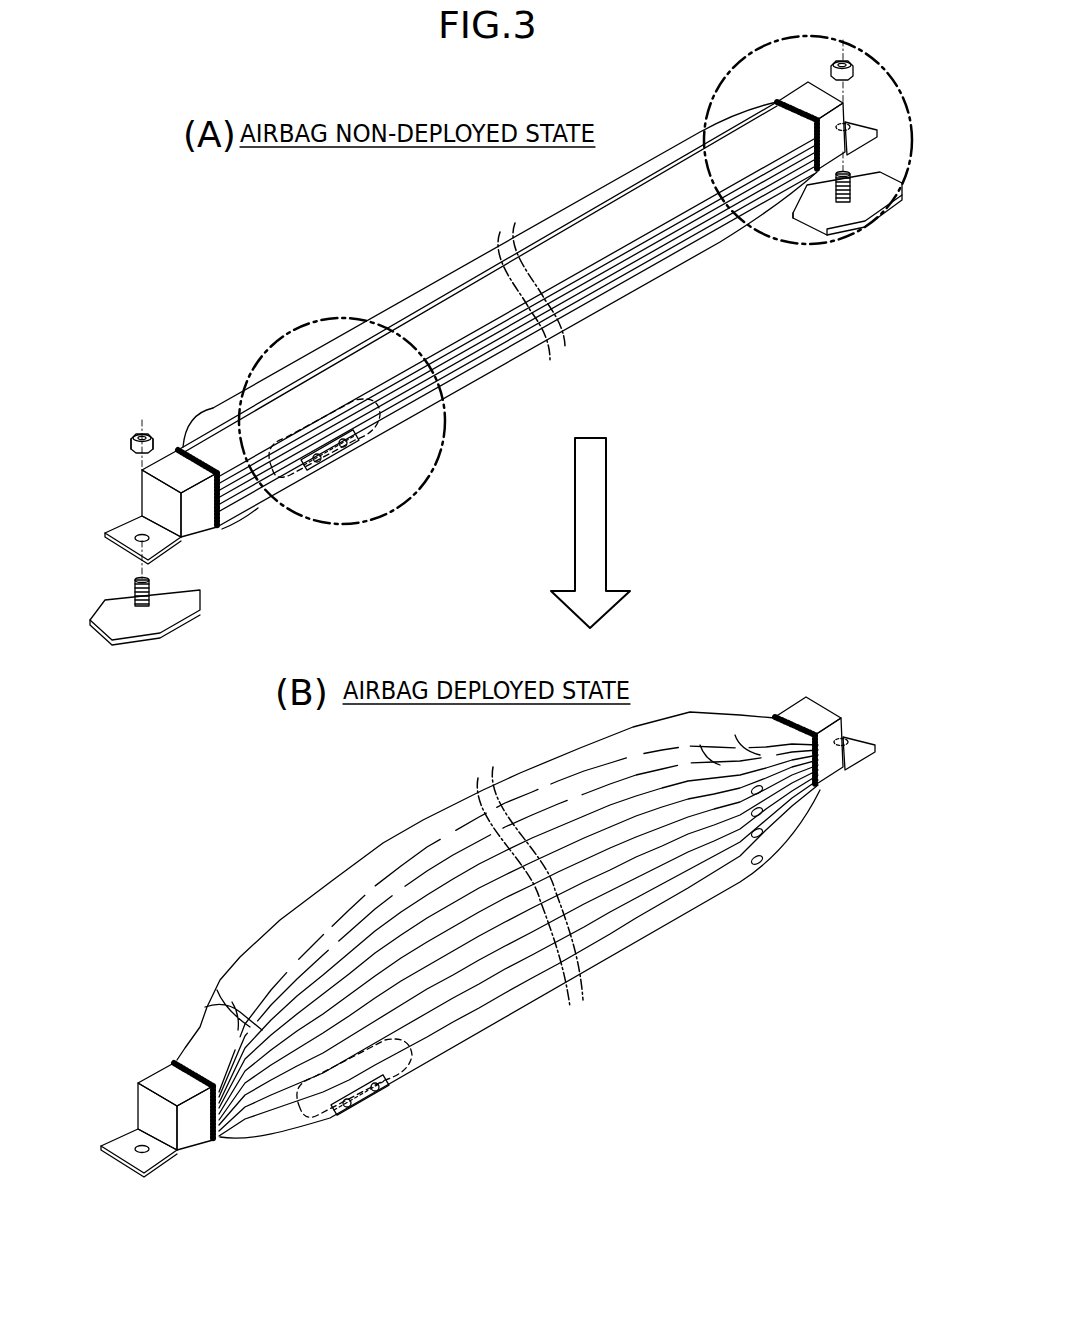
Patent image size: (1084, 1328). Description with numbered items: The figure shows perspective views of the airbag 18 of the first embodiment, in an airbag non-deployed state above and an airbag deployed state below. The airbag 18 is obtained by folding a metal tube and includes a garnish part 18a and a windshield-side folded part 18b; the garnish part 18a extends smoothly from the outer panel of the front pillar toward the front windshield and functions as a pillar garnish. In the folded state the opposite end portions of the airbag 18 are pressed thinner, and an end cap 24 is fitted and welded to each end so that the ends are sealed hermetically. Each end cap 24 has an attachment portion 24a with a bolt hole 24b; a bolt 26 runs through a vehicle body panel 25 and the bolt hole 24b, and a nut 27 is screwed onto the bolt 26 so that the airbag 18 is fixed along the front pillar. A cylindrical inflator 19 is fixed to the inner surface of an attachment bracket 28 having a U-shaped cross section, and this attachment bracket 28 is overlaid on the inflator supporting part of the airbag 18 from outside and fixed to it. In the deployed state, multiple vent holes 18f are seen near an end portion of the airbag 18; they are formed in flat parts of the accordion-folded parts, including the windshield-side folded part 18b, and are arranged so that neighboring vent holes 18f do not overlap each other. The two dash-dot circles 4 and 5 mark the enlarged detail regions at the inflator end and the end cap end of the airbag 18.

The detail region IV (connector side) 4 is at (268, 320).
The detail region V (bracket side) 5 is at (698, 94).
The airbag 18 is at (412, 268).
The garnish part 18a is at (568, 213).
The windshield-side folded part 18b is at (638, 252).
The vent holes 18f is at (763, 860).
The inflator 19 is at (385, 427).
The end cap 24 is at (212, 540).
The attachment portion 24a is at (125, 528).
The bolt hole 24b is at (136, 540).
The vehicle body panel 25 is at (175, 614).
The bolt 26 is at (152, 582).
The nut 27 is at (133, 432).
The attachment bracket 28 is at (340, 470).